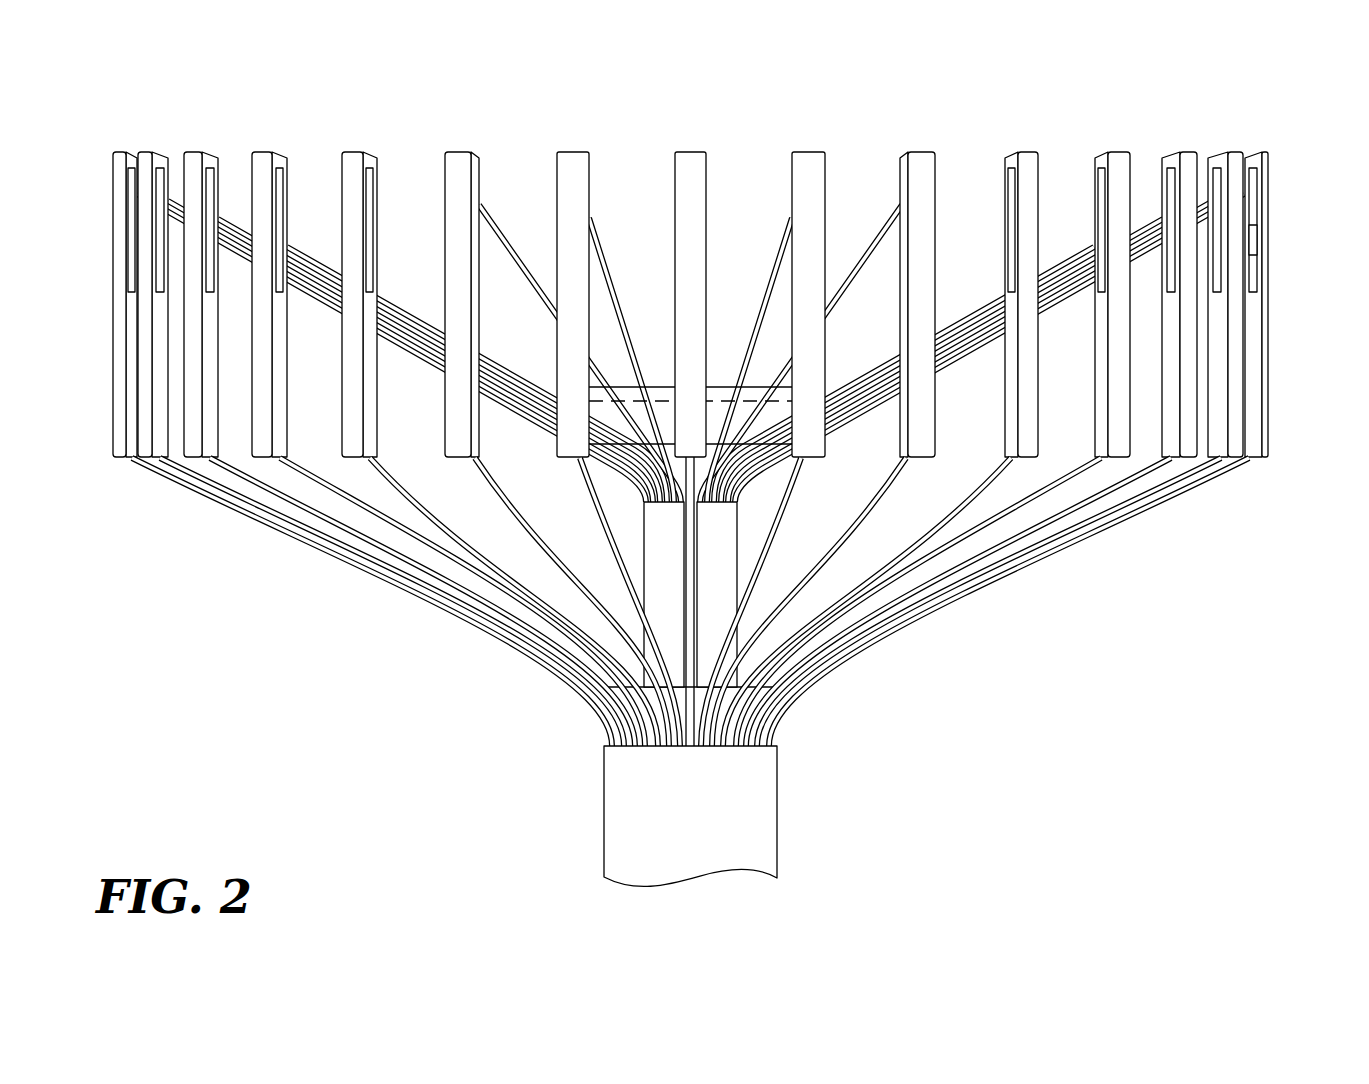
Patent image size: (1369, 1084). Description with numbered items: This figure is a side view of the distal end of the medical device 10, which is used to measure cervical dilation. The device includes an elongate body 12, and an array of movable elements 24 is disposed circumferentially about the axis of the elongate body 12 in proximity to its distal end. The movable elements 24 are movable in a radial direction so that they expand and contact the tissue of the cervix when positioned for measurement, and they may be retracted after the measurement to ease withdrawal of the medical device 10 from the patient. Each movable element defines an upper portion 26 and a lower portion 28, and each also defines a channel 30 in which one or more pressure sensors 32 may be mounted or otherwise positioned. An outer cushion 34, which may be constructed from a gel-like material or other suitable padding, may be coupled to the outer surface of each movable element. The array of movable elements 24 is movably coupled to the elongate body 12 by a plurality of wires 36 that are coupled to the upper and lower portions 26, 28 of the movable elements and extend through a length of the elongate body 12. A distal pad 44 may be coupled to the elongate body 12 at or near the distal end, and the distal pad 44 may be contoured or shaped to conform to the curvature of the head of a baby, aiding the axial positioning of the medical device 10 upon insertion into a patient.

The medical device 10 is at (333, 698).
The elongate body 12 is at (612, 818).
The array of movable elements 24 is at (357, 152).
The upper portion 26 is at (201, 151).
The lower portion 28 is at (153, 460).
The channel 30 is at (128, 244).
The pressure sensor 32 is at (1258, 240).
The outer cushion 34 is at (1268, 170).
The plurality of wires 36 is at (336, 556).
The distal pad 44 is at (715, 385).